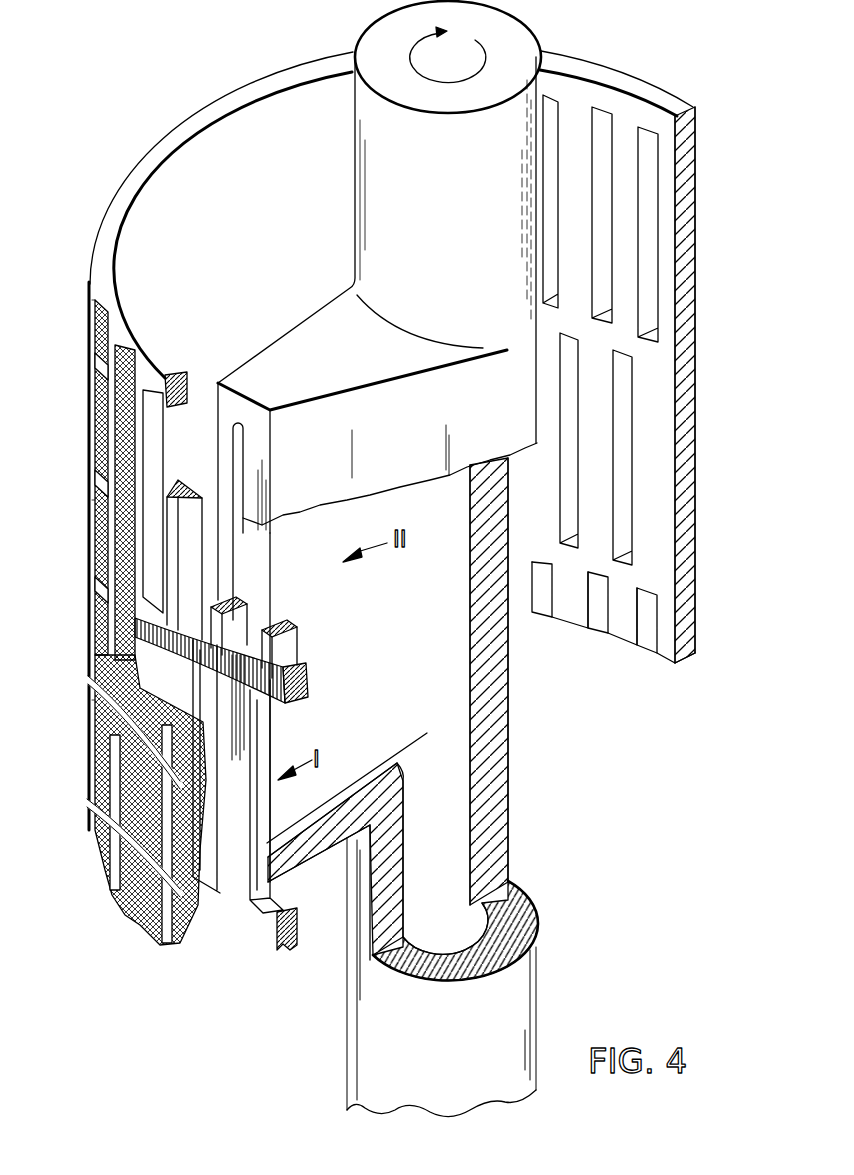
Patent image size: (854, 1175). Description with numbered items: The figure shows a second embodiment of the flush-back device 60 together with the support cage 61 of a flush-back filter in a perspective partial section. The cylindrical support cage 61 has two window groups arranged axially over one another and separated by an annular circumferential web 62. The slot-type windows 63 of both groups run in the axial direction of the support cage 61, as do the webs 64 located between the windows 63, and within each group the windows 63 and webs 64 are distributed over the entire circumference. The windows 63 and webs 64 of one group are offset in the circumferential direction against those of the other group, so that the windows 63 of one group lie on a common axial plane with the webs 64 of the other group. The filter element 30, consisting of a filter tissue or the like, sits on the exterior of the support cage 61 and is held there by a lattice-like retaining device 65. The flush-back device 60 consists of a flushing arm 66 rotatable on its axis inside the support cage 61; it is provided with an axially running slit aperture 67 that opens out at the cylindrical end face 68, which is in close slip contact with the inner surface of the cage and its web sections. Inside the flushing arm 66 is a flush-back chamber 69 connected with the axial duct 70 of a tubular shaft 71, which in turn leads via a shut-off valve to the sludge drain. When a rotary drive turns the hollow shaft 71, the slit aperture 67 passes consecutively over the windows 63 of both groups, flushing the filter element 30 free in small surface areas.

The filter element 30 is at (96, 420).
The flush-back device 60 is at (546, 43).
The support cage 61 is at (668, 363).
The annular circumferential web 62 is at (308, 678).
The slot-type windows 63 is at (205, 502).
The webs 64 is at (182, 556).
The lattice-like retaining device 65 is at (133, 862).
The flushing arm 66 is at (338, 317).
The slit aperture 67 is at (233, 428).
The cylindrical end face 68 is at (257, 481).
The flush-back chamber 69 is at (440, 518).
The axial duct 70 is at (460, 832).
The tubular shaft 71 is at (352, 1063).